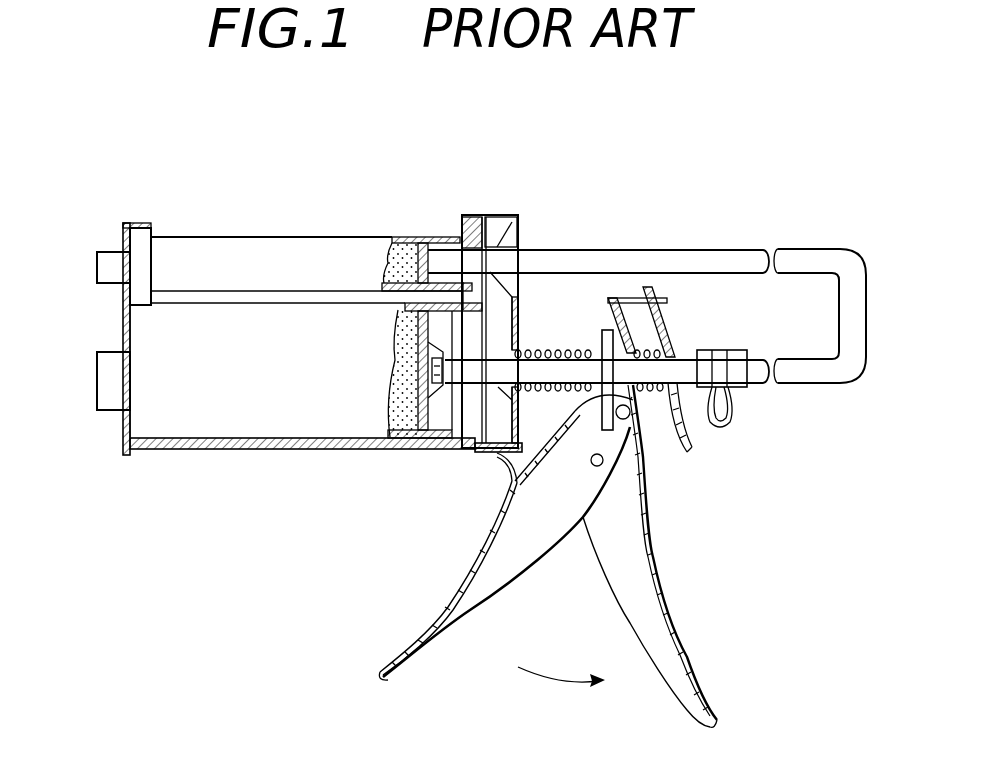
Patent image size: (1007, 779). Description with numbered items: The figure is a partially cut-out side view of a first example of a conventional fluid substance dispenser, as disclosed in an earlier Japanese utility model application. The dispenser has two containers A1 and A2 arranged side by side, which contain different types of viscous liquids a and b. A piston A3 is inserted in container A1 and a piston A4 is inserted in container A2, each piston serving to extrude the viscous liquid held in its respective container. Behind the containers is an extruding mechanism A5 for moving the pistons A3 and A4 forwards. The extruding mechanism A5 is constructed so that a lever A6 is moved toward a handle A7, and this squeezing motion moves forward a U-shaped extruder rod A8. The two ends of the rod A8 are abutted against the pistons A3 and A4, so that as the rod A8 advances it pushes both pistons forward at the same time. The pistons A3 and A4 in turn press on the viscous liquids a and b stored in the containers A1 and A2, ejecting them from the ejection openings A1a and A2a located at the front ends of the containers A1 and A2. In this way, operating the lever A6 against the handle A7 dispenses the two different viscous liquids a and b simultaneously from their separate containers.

The container A1 is at (282, 450).
The ejection opening A1a is at (92, 397).
The container A2 is at (275, 237).
The ejection opening A2a is at (92, 272).
The piston A3 is at (427, 447).
The piston A4 is at (437, 240).
The extruding mechanism A5 is at (715, 230).
The lever A6 is at (458, 647).
The handle A7 is at (667, 648).
The U-shaped extruder rod A8 is at (853, 356).
The viscous liquid a is at (400, 422).
The viscous liquid b is at (400, 242).